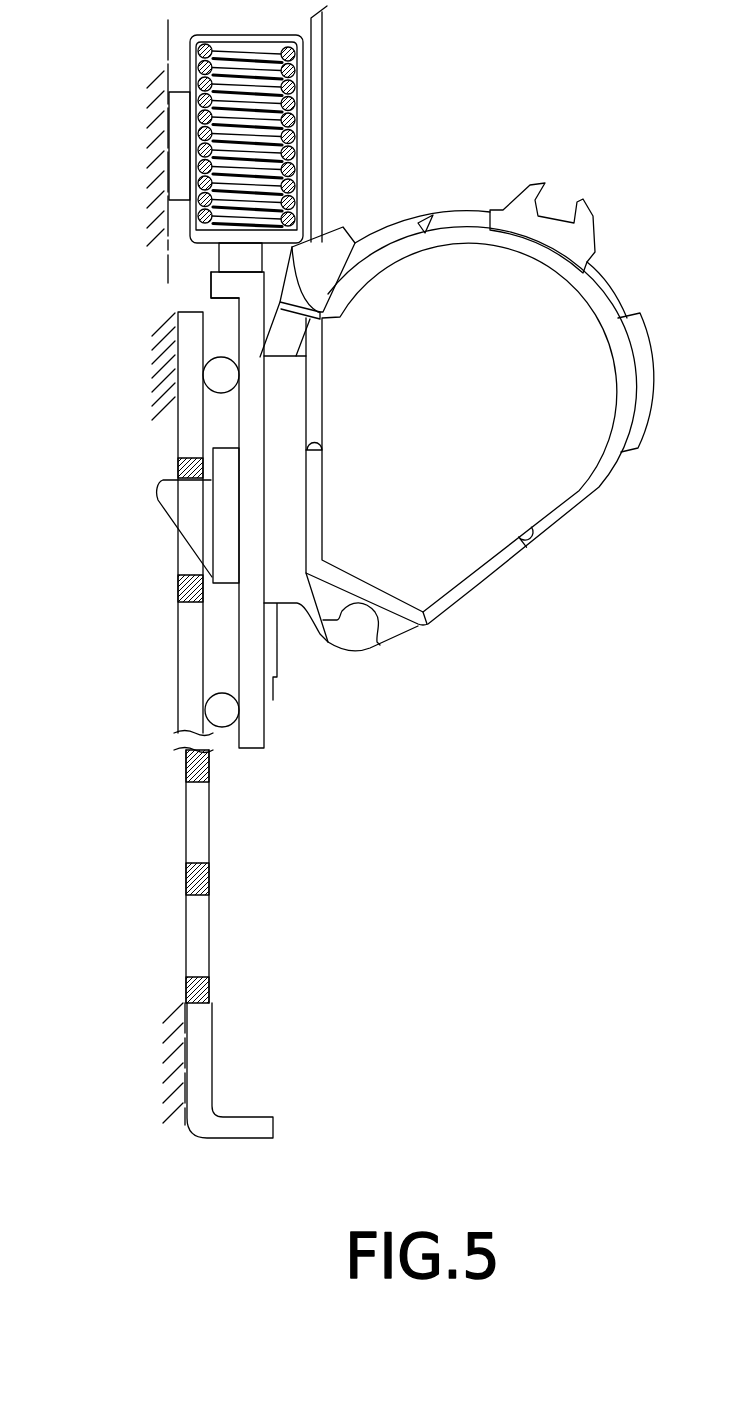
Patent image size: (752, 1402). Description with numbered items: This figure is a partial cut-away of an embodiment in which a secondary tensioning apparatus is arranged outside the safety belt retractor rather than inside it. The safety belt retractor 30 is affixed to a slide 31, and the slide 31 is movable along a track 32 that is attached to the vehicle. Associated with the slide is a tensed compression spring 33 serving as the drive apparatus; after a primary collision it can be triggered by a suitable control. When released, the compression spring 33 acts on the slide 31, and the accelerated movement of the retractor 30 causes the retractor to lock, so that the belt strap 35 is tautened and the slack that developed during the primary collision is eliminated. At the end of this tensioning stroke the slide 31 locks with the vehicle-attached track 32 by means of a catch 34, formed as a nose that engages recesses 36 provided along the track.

The safety belt retractor 30 is at (538, 490).
The slide 31 is at (267, 660).
The track 32 is at (200, 1048).
The compression spring 33 is at (207, 155).
The catch 34 is at (172, 500).
The belt strap 35 is at (320, 113).
The recesses 36 is at (205, 912).